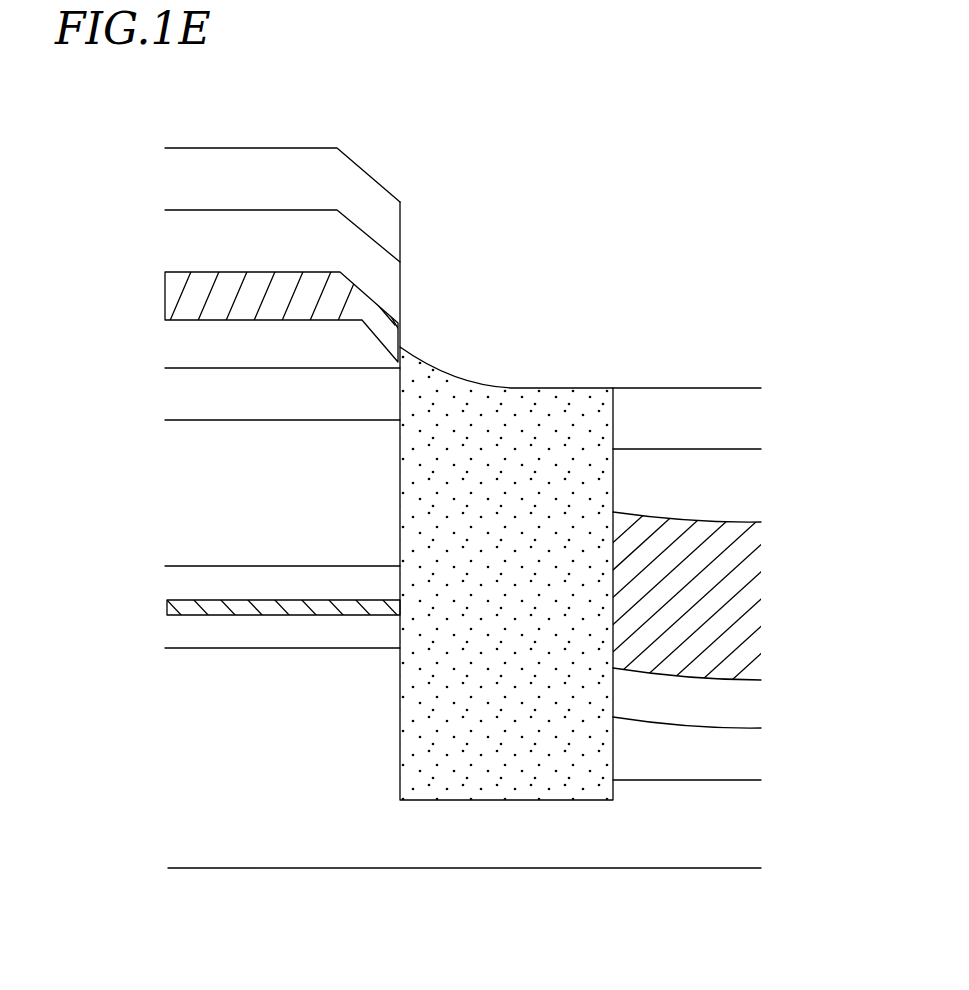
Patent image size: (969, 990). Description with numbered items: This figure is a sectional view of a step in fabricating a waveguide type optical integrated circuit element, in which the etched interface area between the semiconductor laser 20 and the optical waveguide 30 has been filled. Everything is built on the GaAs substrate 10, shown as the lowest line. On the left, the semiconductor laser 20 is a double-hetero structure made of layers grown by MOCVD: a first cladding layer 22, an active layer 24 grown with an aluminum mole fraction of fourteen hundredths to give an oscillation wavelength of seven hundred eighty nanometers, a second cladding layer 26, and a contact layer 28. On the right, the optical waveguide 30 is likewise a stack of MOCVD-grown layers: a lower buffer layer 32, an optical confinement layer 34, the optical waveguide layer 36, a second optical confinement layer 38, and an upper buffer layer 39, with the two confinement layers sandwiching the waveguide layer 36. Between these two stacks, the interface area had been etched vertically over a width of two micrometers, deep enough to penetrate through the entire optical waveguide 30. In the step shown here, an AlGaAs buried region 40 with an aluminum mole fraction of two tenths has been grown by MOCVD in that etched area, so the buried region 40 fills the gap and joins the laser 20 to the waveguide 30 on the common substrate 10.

The GaAs substrate 10 is at (745, 820).
The semiconductor laser 20 is at (285, 109).
The first cladding layer 22 is at (183, 633).
The active layer 24 is at (178, 603).
The second cladding layer 26 is at (185, 577).
The contact layer 28 is at (198, 500).
The optical waveguide 30 is at (689, 355).
The buffer layer 32 is at (193, 393).
The optical confinement layer 34 is at (187, 345).
The optical waveguide layer 36 is at (185, 302).
The optical confinement layer 38 is at (183, 238).
The buffer layer 39 is at (180, 178).
The AlGaAs buried region 40 is at (487, 398).